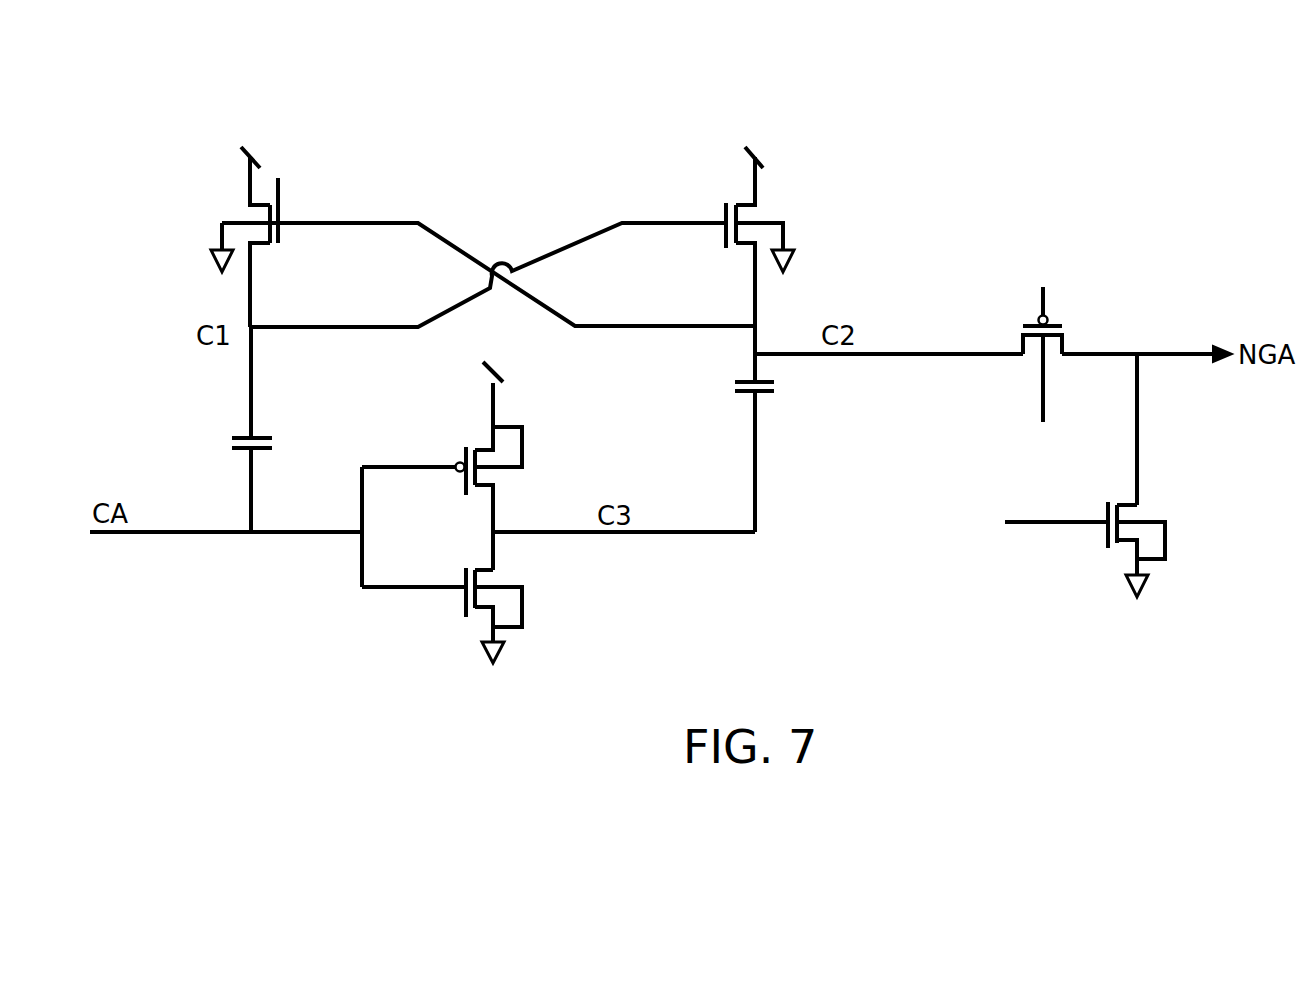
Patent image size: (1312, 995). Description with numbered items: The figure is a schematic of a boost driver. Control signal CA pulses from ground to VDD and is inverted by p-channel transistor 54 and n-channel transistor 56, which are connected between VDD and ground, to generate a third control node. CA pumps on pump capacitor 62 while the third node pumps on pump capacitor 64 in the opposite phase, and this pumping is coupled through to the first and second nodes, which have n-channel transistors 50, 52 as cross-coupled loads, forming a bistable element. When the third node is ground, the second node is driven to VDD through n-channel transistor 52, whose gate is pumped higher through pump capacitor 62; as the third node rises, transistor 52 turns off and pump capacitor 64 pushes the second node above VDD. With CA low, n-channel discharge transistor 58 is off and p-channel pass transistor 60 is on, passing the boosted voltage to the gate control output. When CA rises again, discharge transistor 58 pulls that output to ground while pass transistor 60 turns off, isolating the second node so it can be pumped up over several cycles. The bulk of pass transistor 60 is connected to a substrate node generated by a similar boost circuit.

The n-channel transistor 50 is at (280, 226).
The n-channel transistor 52 is at (724, 238).
The p-channel transistor 54 is at (465, 482).
The n-channel transistor 56 is at (465, 602).
The n-channel discharge transistor 58 is at (1108, 540).
The p-channel pass transistor 60 is at (1028, 326).
The pump capacitor 62 is at (240, 450).
The pump capacitor 64 is at (742, 394).